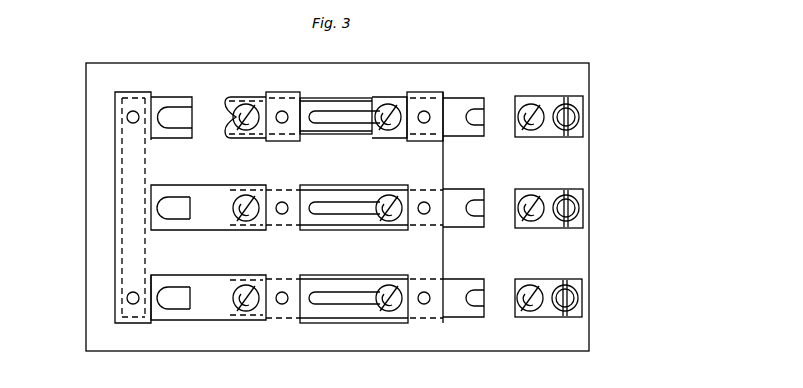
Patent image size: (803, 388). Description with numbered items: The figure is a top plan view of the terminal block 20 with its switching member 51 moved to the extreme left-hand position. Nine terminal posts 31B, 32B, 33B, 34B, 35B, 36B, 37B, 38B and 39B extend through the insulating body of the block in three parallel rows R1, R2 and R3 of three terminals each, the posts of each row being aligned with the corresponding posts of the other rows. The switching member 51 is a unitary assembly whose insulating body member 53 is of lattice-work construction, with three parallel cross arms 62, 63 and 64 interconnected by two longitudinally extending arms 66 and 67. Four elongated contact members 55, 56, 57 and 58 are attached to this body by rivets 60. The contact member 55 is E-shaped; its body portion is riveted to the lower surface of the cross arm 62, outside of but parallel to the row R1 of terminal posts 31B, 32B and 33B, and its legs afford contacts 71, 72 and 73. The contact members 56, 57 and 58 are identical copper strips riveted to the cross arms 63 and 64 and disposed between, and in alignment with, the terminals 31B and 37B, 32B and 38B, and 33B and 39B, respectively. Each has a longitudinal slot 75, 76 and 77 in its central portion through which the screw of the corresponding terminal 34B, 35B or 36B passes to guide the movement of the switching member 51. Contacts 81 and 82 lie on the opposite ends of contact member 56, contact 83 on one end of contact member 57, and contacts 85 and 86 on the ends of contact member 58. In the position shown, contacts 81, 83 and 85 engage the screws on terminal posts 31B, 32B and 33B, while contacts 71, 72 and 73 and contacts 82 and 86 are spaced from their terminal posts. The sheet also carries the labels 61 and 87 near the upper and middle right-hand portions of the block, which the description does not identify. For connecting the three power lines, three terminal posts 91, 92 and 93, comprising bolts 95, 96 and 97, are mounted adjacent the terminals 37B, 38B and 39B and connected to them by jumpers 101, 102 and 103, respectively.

The terminal block 20 is at (596, 53).
The row of terminal posts R1 is at (216, 58).
The row of terminal posts R2 is at (392, 58).
The row of terminal posts R3 is at (530, 58).
The switching member 51 is at (449, 87).
The body member 53 is at (130, 92).
The contact member 55 is at (122, 247).
The contact member 56 is at (354, 284).
The contact member 57 is at (354, 192).
The contact member 58 is at (343, 88).
The rivets 60 is at (127, 117).
The terminal 61 is at (447, 62).
The cross arm 62 is at (146, 92).
The cross arm 63 is at (280, 92).
The cross arm 64 is at (423, 92).
The longitudinally extending arm 66 is at (196, 142).
The longitudinally extending arm 67 is at (208, 276).
The contact 71 is at (168, 320).
The contact 72 is at (168, 221).
The contact 73 is at (168, 130).
The elongated slot 75 is at (347, 262).
The elongated slot 76 is at (356, 170).
The elongated slot 77 is at (366, 98).
The contact 81 is at (258, 320).
The contact 82 is at (468, 279).
The contact 83 is at (245, 197).
The contact 85 is at (240, 97).
The contact 86 is at (468, 97).
The slotted tab 87 is at (468, 189).
The terminal post 91 is at (589, 292).
The terminal post 92 is at (588, 202).
The terminal post 93 is at (583, 104).
The bolt 95 is at (577, 279).
The bolt 96 is at (574, 194).
The bolt 97 is at (571, 100).
The jumper 101 is at (541, 283).
The jumper 102 is at (560, 170).
The jumper 103 is at (543, 96).
The terminal post 31B is at (240, 320).
The terminal post 32B is at (229, 208).
The terminal post 33B is at (238, 103).
The terminal post 34B is at (380, 307).
The terminal post 35B is at (382, 215).
The terminal post 36B is at (379, 134).
The terminal post 37B is at (570, 312).
The terminal post 38B is at (568, 213).
The terminal post 39B is at (568, 103).